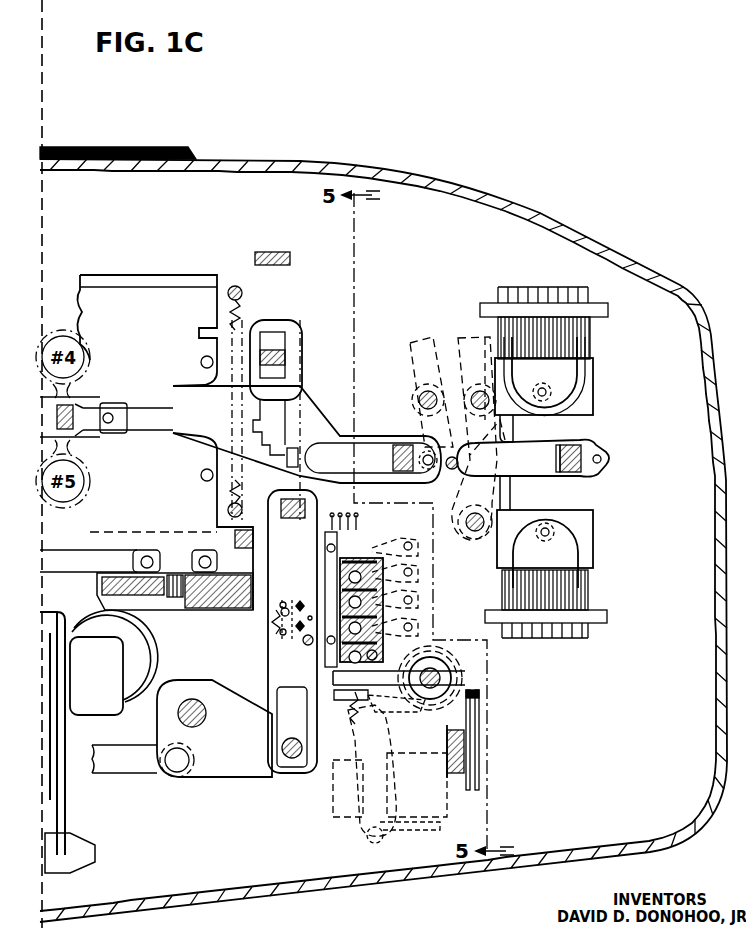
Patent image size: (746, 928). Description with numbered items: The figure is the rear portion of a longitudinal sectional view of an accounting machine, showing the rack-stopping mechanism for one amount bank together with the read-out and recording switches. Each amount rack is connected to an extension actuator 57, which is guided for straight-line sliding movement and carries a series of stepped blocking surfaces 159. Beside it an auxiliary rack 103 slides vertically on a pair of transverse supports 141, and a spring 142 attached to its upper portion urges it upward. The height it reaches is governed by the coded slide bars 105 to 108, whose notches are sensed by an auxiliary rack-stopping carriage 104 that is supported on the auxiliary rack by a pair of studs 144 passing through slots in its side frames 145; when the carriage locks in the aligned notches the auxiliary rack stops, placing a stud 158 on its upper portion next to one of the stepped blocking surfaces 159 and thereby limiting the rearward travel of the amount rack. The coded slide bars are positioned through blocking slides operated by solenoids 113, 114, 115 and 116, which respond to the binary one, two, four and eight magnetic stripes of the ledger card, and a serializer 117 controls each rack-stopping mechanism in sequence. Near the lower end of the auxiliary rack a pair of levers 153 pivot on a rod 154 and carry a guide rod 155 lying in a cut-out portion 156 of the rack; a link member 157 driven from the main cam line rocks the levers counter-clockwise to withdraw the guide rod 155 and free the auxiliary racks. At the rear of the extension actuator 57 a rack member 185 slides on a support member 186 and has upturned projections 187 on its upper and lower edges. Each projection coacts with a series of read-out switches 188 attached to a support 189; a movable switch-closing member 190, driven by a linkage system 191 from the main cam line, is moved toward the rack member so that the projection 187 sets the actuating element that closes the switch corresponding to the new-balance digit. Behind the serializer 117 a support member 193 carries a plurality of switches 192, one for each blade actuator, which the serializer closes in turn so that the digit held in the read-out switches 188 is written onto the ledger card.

The extension actuator 57 is at (302, 388).
The auxiliary rack 103 is at (293, 322).
The auxiliary rack-stopping carriage 104 is at (268, 664).
The coded slide bar 105 is at (325, 545).
The coded slide bar 108 is at (360, 525).
The solenoid 113 is at (413, 544).
The solenoid 114 is at (413, 570).
The solenoid 115 is at (413, 598).
The solenoid 116 is at (413, 626).
The serializer 117 is at (466, 668).
The transverse support 141 is at (290, 358).
The spring 142 is at (242, 296).
The stud 144 is at (322, 600).
The side frame 145 is at (280, 612).
The lever 153 is at (224, 778).
The rod 154 is at (192, 727).
The guide rod 155 is at (300, 720).
The cut-out portion 156 is at (277, 750).
The link member 157 is at (123, 775).
The stud 158 is at (287, 456).
The stepped blocking surface 159 is at (214, 418).
The rack member 185 is at (606, 474).
The support member 186 is at (583, 445).
The upturned projection 187 is at (513, 428).
The read-out switch 188 is at (588, 345).
The support 189 is at (592, 310).
The switch-closing member 190 is at (590, 378).
The linkage system 191 is at (412, 364).
The switch 192 is at (480, 738).
The support member 193 is at (447, 782).